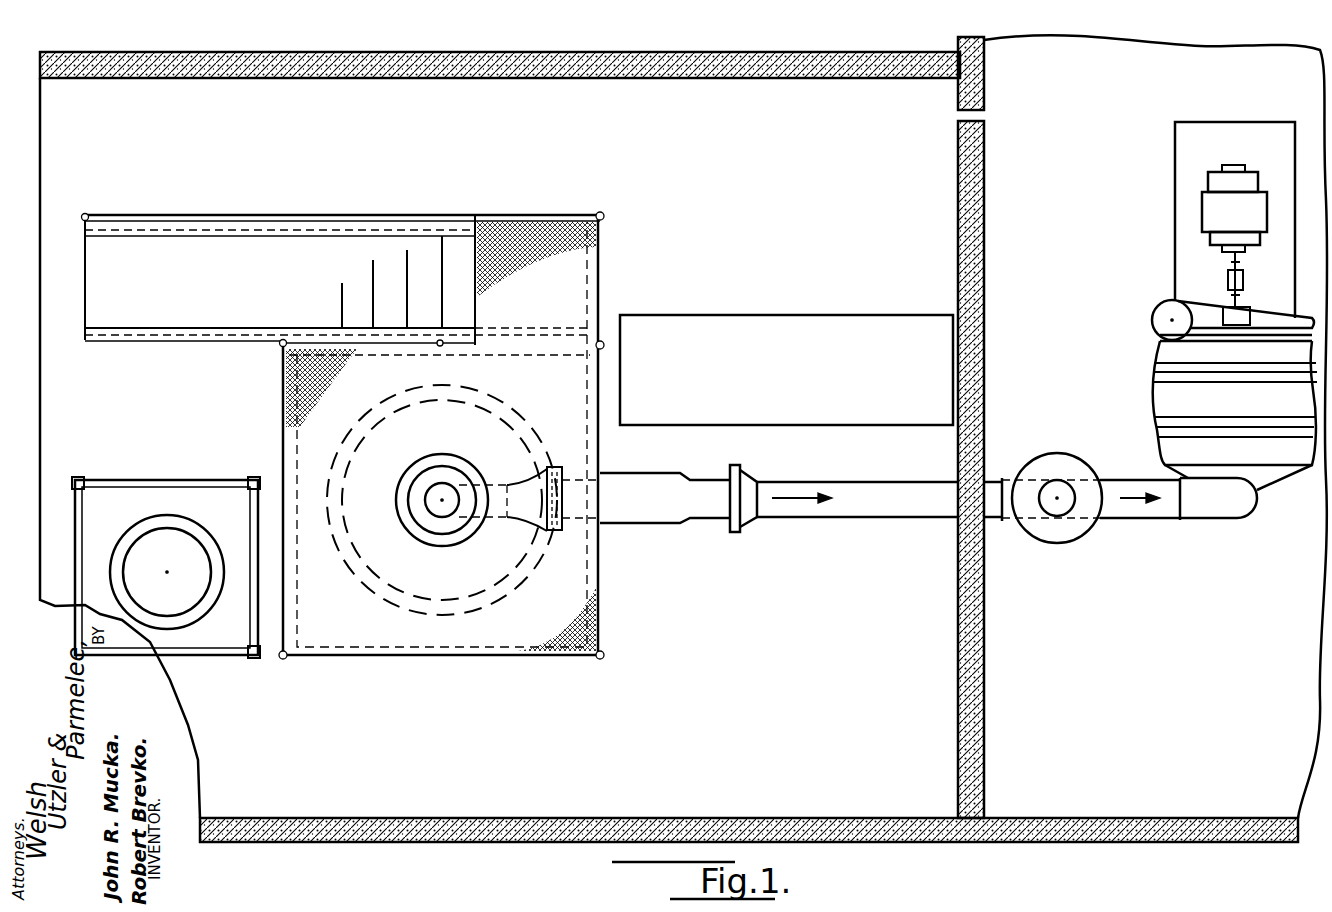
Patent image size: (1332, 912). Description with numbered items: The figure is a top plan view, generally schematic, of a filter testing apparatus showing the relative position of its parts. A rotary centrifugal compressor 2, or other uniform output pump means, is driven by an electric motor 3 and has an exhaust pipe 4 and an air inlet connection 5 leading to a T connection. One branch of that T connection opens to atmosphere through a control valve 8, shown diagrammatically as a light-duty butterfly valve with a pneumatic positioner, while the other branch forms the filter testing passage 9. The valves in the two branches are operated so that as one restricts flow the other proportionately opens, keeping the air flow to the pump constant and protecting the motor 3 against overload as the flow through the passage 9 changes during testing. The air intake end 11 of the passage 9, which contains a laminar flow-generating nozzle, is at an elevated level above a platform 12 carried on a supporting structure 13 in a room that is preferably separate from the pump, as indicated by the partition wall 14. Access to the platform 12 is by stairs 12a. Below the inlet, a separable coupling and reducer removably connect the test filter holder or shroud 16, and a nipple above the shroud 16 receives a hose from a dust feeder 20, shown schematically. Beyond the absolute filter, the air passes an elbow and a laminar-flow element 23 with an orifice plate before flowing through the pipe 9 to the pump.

The rotary centrifugal compressor 2 is at (1163, 400).
The electric motor 3 is at (1215, 208).
The exhaust pipe 4 is at (1160, 312).
The air inlet connection 5 is at (1140, 520).
The control valve 8 is at (1063, 518).
The filter testing passage 9 is at (900, 497).
The air intake end 11 is at (417, 503).
The platform 12 is at (503, 622).
The stairs 12a is at (340, 254).
The supporting structure 13 is at (607, 622).
The partition wall 14 is at (957, 605).
The test filter holder or shroud 16 is at (426, 540).
The dust feeder 20 is at (210, 632).
The laminar-flow element 23 is at (652, 503).